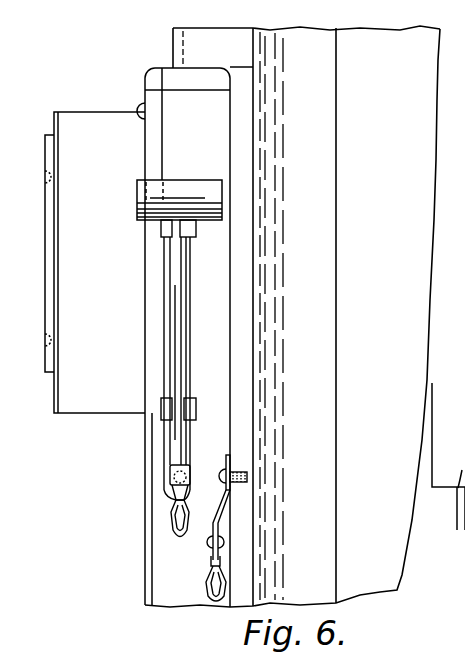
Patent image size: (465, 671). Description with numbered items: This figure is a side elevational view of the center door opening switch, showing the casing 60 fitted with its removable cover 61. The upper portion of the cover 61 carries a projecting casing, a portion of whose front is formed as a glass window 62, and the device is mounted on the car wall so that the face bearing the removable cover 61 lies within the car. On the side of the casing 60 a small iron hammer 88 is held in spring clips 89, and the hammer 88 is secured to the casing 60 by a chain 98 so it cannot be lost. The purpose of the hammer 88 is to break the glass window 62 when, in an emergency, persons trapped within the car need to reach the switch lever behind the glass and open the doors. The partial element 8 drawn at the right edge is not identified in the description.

The removable cover 61 is at (158, 141).
The glass window 62 is at (50, 247).
The small iron hammer 88 is at (190, 188).
The spring clips 89 is at (195, 403).
The casing 60 is at (178, 395).
The chain 98 is at (206, 591).
The adjacent part 8 is at (448, 459).